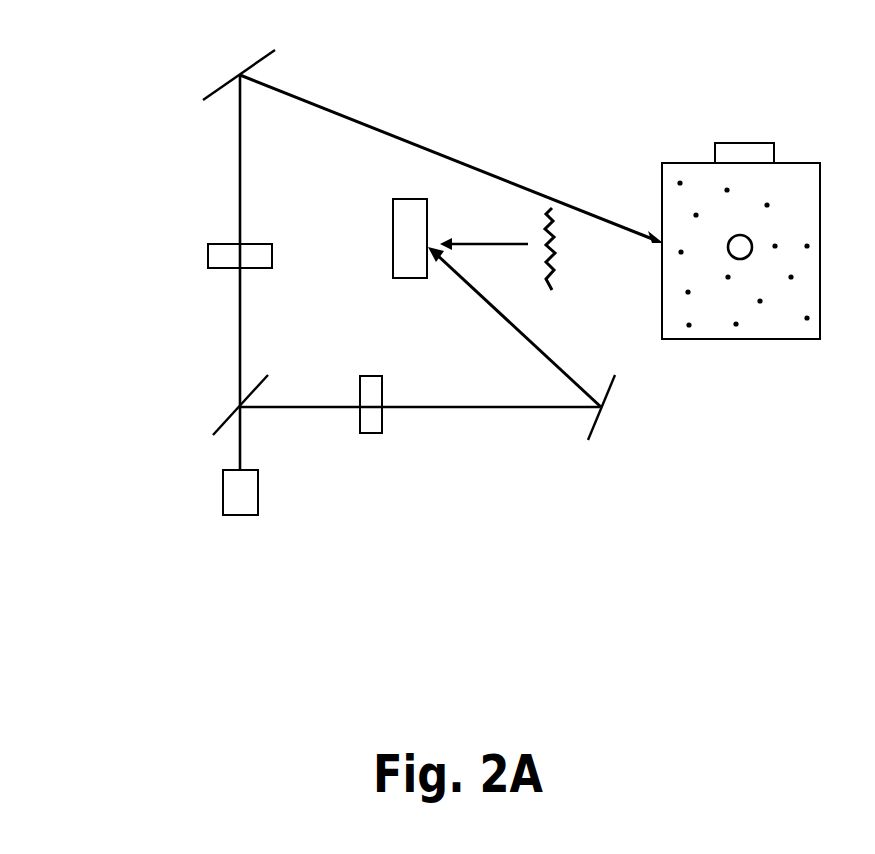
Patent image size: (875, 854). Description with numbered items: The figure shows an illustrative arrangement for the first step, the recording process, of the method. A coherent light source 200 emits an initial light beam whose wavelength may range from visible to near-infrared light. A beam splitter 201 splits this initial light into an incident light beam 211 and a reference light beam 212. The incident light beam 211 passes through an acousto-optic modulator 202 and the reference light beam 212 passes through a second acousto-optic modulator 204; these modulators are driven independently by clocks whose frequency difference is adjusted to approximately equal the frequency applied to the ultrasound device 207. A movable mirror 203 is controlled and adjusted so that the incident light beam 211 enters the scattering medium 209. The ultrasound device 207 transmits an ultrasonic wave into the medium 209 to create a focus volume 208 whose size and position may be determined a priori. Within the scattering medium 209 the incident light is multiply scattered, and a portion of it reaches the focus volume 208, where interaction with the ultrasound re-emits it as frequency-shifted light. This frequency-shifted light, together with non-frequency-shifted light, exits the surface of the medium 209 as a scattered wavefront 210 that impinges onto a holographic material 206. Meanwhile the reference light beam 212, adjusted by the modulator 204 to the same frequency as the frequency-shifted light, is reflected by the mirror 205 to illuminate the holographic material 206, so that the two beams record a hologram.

The coherent light source 200 is at (248, 503).
The beam splitter 201 is at (222, 423).
The acousto-optic modulator 202 is at (222, 257).
The movable mirror 203 is at (215, 92).
The acousto-optic modulator 204 is at (375, 428).
The mirror 205 is at (592, 428).
The holographic material 206 is at (400, 270).
The ultrasound device 207 is at (742, 160).
The ultrasound focus volume 208 is at (741, 244).
The scattering medium 209 is at (770, 323).
The scattered wavefront 210 is at (555, 287).
The incident light beam 211 is at (602, 217).
The reference light beam 212 is at (483, 300).